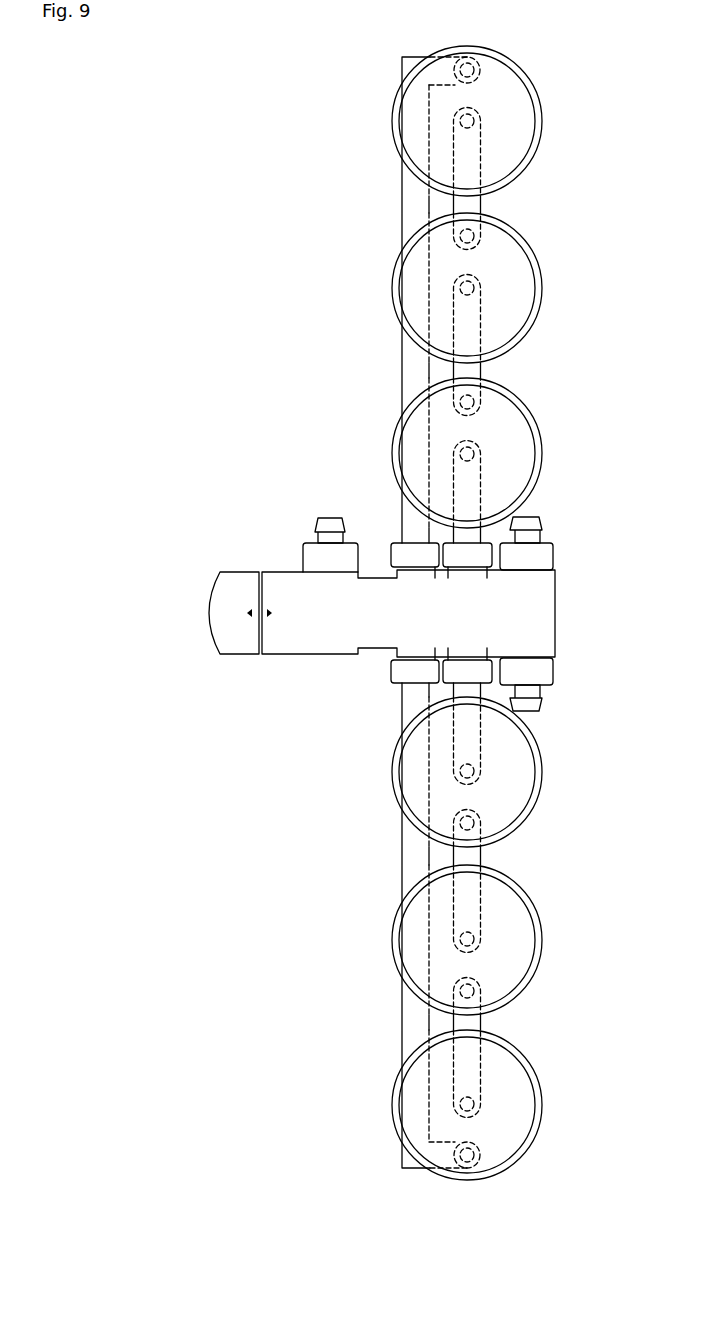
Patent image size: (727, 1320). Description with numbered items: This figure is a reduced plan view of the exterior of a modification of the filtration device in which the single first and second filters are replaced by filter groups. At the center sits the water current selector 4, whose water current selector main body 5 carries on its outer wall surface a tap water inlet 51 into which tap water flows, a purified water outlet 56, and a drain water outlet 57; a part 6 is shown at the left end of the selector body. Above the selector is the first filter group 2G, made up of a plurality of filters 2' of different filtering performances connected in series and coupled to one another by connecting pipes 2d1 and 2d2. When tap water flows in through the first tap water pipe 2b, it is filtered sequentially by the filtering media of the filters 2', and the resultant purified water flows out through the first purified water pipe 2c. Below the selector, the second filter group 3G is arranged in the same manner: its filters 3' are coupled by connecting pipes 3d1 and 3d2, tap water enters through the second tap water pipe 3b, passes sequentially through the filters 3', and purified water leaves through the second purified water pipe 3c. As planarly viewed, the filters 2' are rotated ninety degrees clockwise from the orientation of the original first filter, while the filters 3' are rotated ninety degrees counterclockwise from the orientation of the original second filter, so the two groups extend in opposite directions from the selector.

The filter 2' is at (491, 287).
The connecting pipe 2d2 is at (477, 207).
The connecting pipe 2d1 is at (477, 373).
The first filter group 2G is at (600, 100).
The first tap water pipe 2b is at (462, 533).
The first purified water pipe 2c is at (408, 528).
The purified water outlet 56 is at (331, 516).
The tap water inlet 51 is at (529, 514).
The drain water outlet 57 is at (530, 713).
The coupling end piece 6 is at (232, 655).
The water current selector main body 5 is at (313, 656).
The water current selector 4 is at (277, 708).
The second purified water pipe 3c is at (400, 707).
The second tap water pipe 3b is at (467, 687).
The filter 3' is at (491, 938).
The connecting pipe 3d1 is at (478, 857).
The connecting pipe 3d2 is at (478, 1022).
The second filter group 3G is at (602, 813).